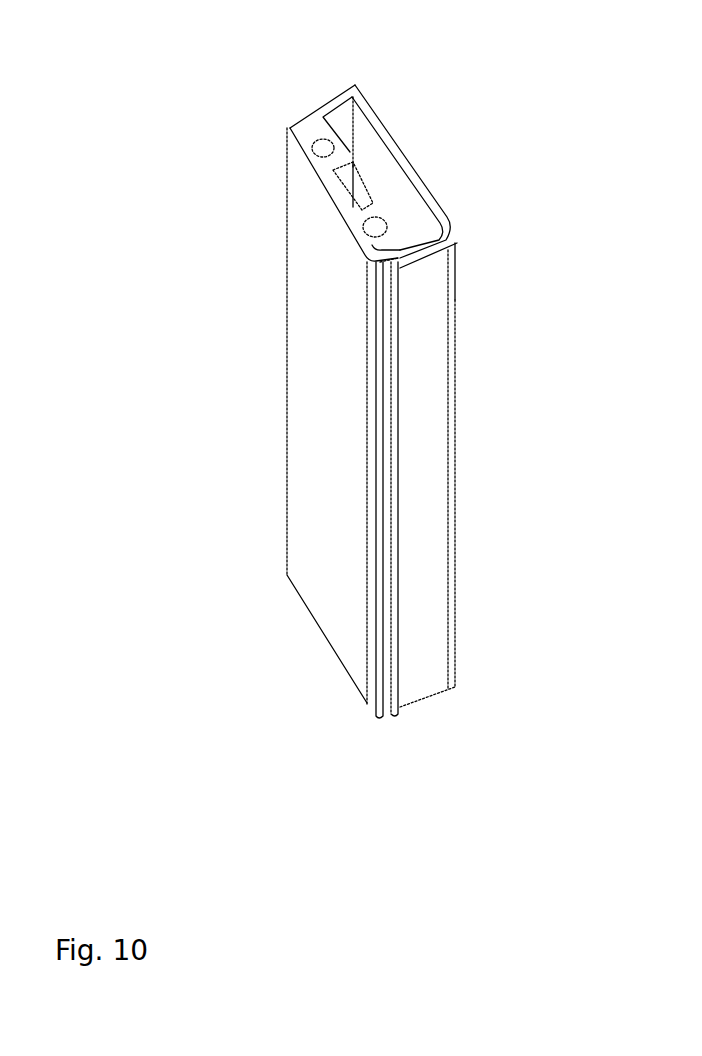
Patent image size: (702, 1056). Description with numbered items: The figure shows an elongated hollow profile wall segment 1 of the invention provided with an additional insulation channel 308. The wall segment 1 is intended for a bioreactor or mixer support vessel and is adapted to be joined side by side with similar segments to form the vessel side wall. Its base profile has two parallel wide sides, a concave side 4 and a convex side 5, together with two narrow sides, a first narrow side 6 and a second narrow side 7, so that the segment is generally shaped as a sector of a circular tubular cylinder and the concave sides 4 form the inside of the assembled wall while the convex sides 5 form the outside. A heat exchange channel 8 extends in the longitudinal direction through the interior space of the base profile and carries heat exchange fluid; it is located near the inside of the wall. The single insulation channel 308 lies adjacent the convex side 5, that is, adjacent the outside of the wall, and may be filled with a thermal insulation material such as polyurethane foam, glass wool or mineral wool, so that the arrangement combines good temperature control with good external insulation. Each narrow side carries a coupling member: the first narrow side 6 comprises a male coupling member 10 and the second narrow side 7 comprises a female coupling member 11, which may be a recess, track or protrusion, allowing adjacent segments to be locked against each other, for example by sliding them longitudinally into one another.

The hollow profile wall segment 1 is at (150, 379).
The concave wide side 4 is at (297, 258).
The convex wide side 5 is at (430, 178).
The first narrow side 6 is at (316, 118).
The second narrow side 7 is at (443, 298).
The heat exchange channel 8 is at (380, 233).
The male coupling member 10 is at (290, 125).
The female coupling member 11 is at (400, 268).
The insulation channel 308 is at (387, 177).